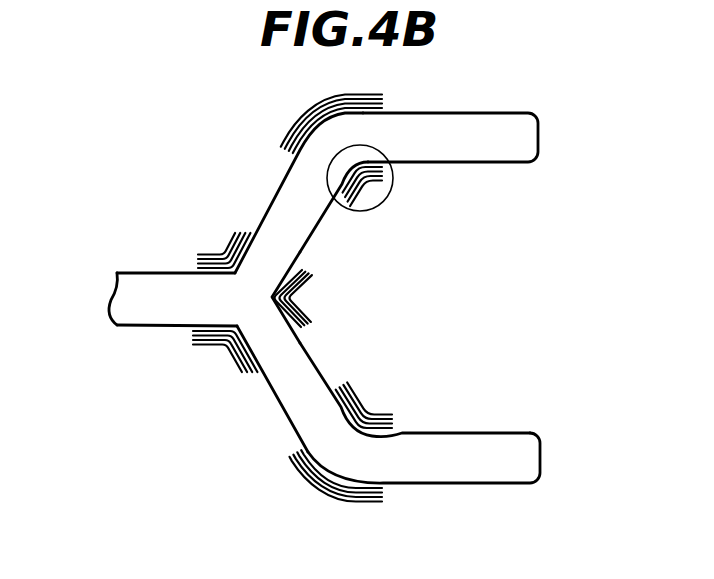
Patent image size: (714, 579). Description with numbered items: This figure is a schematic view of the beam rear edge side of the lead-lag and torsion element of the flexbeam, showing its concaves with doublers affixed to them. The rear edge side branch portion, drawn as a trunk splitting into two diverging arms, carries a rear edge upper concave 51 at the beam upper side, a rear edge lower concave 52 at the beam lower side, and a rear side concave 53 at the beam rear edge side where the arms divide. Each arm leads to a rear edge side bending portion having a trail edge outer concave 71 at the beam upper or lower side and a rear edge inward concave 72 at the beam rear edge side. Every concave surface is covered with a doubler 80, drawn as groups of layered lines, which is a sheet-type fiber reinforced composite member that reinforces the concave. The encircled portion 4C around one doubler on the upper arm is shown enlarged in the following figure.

The rear edge upper concave 51 is at (181, 273).
The rear edge lower concave 52 is at (232, 321).
The rear side concave 53 is at (277, 280).
The trail edge outer concave 71 is at (390, 114).
The rear edge inward concave 72 is at (368, 161).
The doubler 80 is at (320, 112).
The encircled portion 4C is at (397, 177).